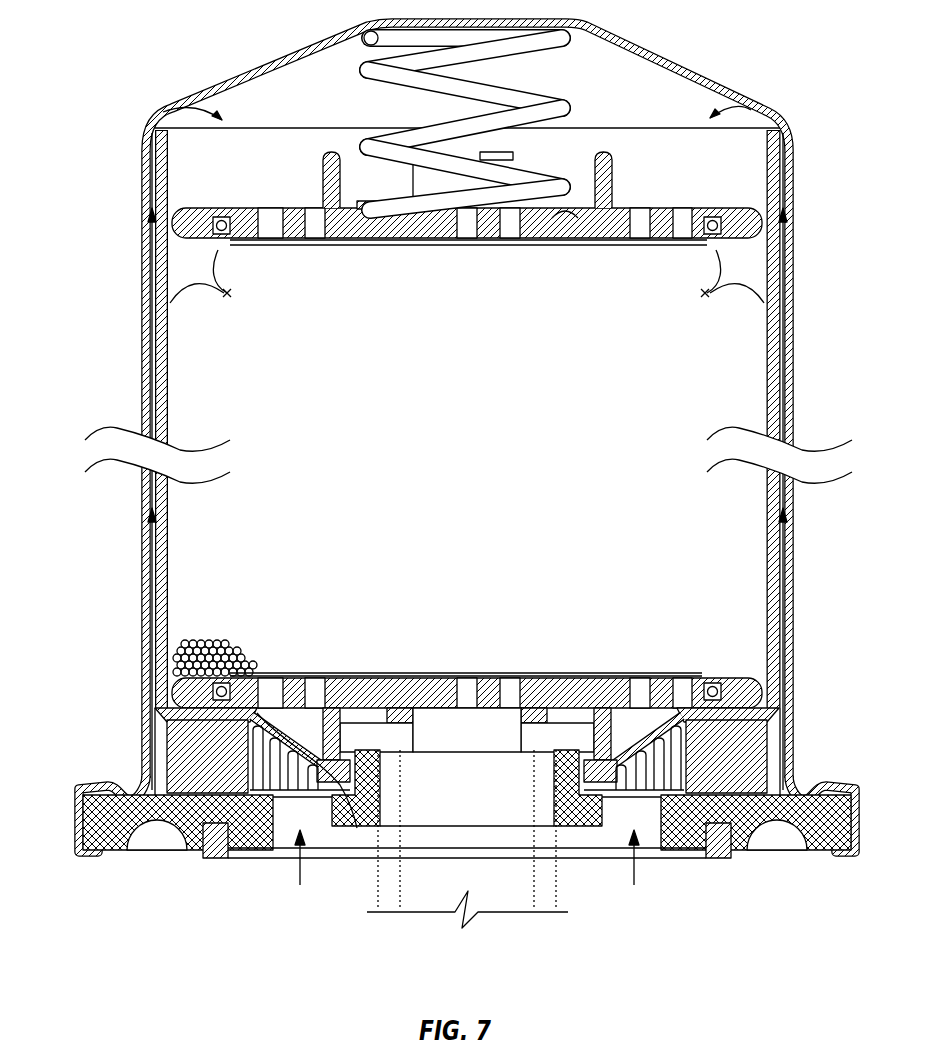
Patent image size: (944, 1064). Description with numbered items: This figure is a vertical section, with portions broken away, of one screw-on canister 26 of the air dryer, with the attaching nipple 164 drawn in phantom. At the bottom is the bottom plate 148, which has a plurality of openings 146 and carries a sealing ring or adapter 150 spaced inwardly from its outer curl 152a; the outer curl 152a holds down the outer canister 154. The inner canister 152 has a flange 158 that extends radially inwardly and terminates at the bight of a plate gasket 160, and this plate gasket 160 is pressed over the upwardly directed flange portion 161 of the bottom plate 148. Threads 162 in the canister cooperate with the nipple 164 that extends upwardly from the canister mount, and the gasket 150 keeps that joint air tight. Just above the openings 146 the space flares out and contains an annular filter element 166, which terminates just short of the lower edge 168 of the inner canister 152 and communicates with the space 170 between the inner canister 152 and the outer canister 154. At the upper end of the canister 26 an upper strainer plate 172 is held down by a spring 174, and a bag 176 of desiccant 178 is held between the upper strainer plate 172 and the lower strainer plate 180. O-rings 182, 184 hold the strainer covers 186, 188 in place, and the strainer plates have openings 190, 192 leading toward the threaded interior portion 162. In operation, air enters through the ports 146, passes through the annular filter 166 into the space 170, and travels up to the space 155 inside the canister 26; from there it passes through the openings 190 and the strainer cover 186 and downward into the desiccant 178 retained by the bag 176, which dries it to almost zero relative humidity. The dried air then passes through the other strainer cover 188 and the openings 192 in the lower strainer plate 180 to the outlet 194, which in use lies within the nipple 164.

The canister unit 26 is at (730, 72).
The openings 146 is at (287, 807).
The bottom plate 148 is at (168, 828).
The sealing ring or adapter 150 is at (216, 856).
The inner canister 152 is at (150, 638).
The outer curl 152a is at (105, 852).
The outer canister 154 is at (118, 783).
The space inside the canister 155 is at (286, 115).
The flange 158 is at (246, 712).
The plate gasket 160 is at (384, 713).
The upwardly directed flange portion 161 is at (370, 772).
The threads 162 is at (362, 768).
The nipple 164 is at (560, 905).
The filter element 166 is at (782, 762).
The lower edge 168 is at (175, 752).
The space between the inner and outer canisters 170 is at (150, 585).
The upper strainer plate 172 is at (660, 220).
The spring 174 is at (568, 107).
The bag 176 is at (188, 280).
The desiccant 178 is at (446, 413).
The lower strainer plate 180 is at (348, 693).
The O-ring 182 is at (716, 250).
The O-ring 184 is at (224, 647).
The strainer cover 186 is at (470, 244).
The strainer cover 188 is at (556, 678).
The openings 190 is at (513, 244).
The openings 192 is at (294, 685).
The outlet 194 is at (448, 748).